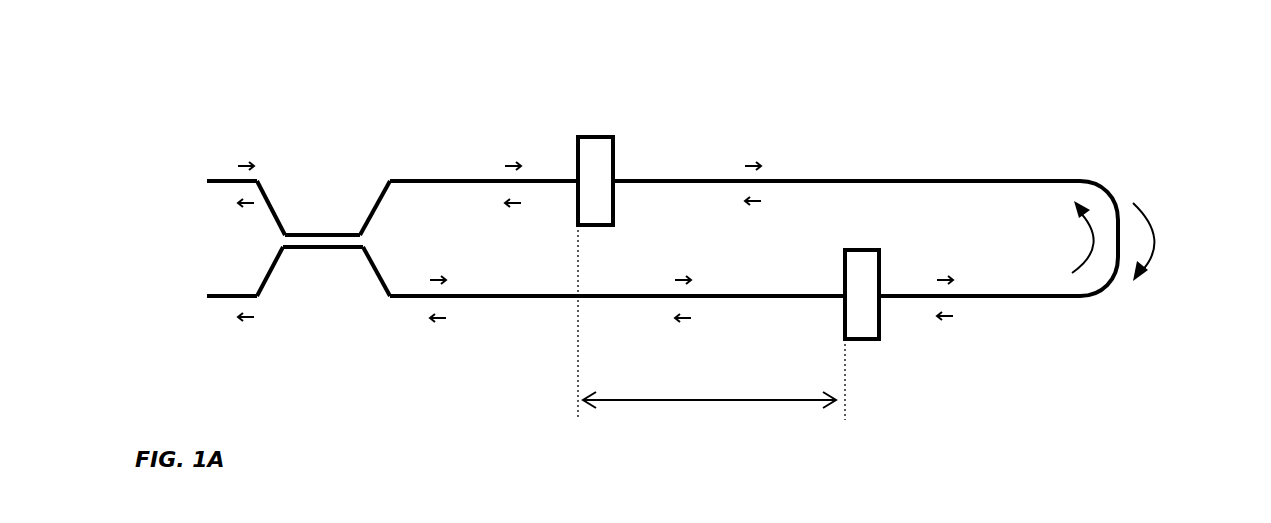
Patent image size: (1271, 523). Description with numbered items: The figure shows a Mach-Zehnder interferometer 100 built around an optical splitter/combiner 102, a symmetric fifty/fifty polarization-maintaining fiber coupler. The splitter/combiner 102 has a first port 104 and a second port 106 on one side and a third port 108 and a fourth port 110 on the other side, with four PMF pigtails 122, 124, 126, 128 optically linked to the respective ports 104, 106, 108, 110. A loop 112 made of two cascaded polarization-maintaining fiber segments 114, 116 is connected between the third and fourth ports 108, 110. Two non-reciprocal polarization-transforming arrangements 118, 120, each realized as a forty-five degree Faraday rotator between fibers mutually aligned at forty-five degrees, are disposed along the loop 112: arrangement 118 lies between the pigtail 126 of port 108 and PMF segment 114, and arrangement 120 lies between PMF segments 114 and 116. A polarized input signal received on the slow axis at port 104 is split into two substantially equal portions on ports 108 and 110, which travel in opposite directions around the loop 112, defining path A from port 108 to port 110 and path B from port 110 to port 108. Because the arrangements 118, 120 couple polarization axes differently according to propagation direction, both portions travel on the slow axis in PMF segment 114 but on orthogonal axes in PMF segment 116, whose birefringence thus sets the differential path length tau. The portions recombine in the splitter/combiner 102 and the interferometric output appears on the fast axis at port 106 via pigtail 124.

The Mach-Zehnder interferometer 100 is at (163, 92).
The optical splitter/combiner 102 is at (328, 243).
The first port 104 is at (262, 183).
The second port 106 is at (258, 300).
The third port 108 is at (390, 180).
The fourth port 110 is at (392, 298).
The loop 112 is at (928, 190).
The PMF segment 114 is at (1005, 181).
The PMF segment 116 is at (622, 296).
The non-reciprocal polarization-transforming arrangement 118 is at (614, 165).
The non-reciprocal polarization-transforming arrangement 120 is at (880, 325).
The PMF pigtail 122 is at (258, 179).
The PMF pigtail 124 is at (257, 299).
The PMF pigtail 126 is at (410, 180).
The PMF pigtail 128 is at (412, 299).